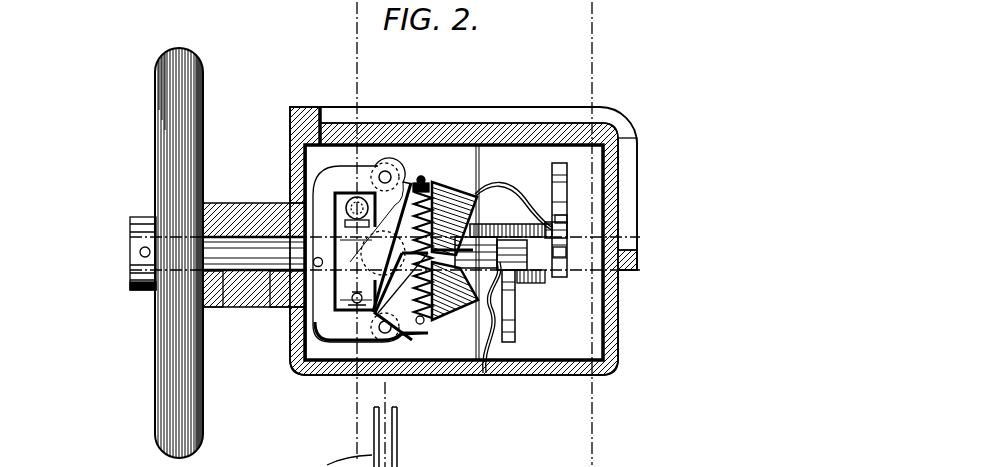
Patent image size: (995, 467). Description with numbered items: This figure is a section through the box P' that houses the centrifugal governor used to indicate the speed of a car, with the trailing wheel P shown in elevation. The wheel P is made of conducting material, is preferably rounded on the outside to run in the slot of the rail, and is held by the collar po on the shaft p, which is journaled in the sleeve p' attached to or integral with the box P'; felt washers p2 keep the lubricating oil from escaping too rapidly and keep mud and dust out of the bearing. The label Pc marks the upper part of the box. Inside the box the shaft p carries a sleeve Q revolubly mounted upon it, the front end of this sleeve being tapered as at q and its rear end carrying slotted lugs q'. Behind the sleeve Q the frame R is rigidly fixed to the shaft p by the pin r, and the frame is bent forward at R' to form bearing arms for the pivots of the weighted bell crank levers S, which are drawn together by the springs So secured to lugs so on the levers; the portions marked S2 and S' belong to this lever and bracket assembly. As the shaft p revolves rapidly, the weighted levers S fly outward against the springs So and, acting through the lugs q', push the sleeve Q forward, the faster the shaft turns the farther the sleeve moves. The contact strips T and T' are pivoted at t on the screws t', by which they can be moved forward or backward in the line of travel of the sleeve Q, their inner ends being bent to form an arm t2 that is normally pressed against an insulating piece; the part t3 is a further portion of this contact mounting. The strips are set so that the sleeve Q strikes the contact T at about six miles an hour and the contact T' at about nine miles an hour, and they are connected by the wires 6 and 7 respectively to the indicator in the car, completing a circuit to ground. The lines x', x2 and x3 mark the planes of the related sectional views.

The trailing wheel P is at (193, 253).
The box P' is at (479, 241).
The casing pocket Pc is at (651, 175).
The collar po is at (130, 288).
The shaft p is at (273, 271).
The sleeve p' is at (296, 314).
The washers p2 is at (275, 308).
The frame R is at (334, 254).
The bearing arms R' is at (350, 246).
The slotted lugs q' is at (284, 258).
The pin r is at (318, 267).
The bracket S2 is at (352, 197).
The bell crank levers S is at (451, 245).
The springs So is at (427, 187).
The lugs so is at (437, 200).
The lever S' is at (401, 296).
The sleeve Q is at (488, 300).
The tapering front end q is at (492, 219).
The wire 7 is at (492, 192).
The contact strip T is at (516, 317).
The contact strip T' is at (612, 209).
The pivot t is at (632, 205).
The screws t' is at (586, 257).
The arm t2 is at (560, 262).
The rack bar t3 is at (575, 185).
The wire 6 is at (514, 375).
The section line x' is at (592, 232).
The section line x2 is at (387, 424).
The section line x3 is at (350, 232).